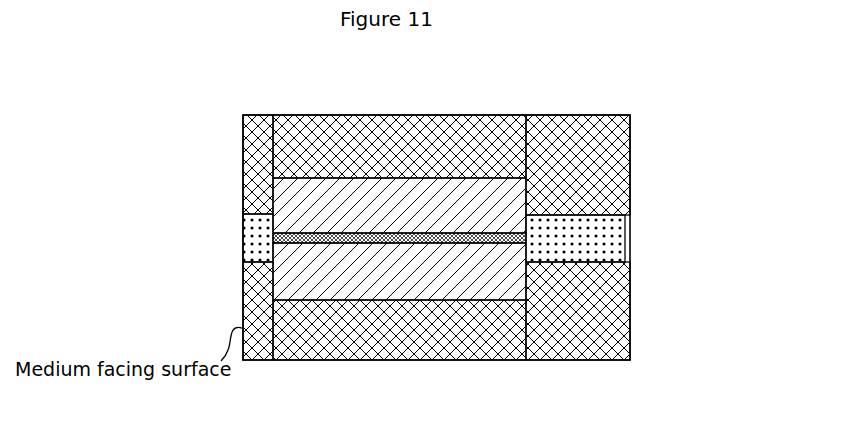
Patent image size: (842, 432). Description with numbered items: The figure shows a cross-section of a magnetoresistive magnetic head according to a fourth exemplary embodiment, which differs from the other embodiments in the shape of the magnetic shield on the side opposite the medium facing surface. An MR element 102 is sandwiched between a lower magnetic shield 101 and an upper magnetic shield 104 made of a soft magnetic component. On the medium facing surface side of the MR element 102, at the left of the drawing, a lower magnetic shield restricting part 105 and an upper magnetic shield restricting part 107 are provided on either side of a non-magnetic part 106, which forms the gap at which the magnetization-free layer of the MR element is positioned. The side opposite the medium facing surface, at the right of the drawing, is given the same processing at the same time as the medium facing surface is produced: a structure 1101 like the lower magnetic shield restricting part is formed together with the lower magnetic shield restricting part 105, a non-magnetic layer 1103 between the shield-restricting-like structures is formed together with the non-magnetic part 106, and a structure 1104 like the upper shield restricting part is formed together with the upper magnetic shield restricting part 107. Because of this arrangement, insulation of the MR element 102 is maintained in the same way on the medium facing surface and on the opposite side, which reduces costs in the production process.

The lower magnetic shield 101 is at (400, 361).
The MR element 102 is at (514, 266).
The upper magnetic shield 104 is at (395, 115).
The lower magnetic shield restricting part 105 is at (243, 288).
The non-magnetic part 106 is at (243, 243).
The upper magnetic shield restricting part 107 is at (243, 150).
The structure like the lower magnetic shield restricting part 1101 is at (630, 322).
The non-magnetic layer 1103 is at (625, 224).
The structure like the upper shield restricting part 1104 is at (630, 152).